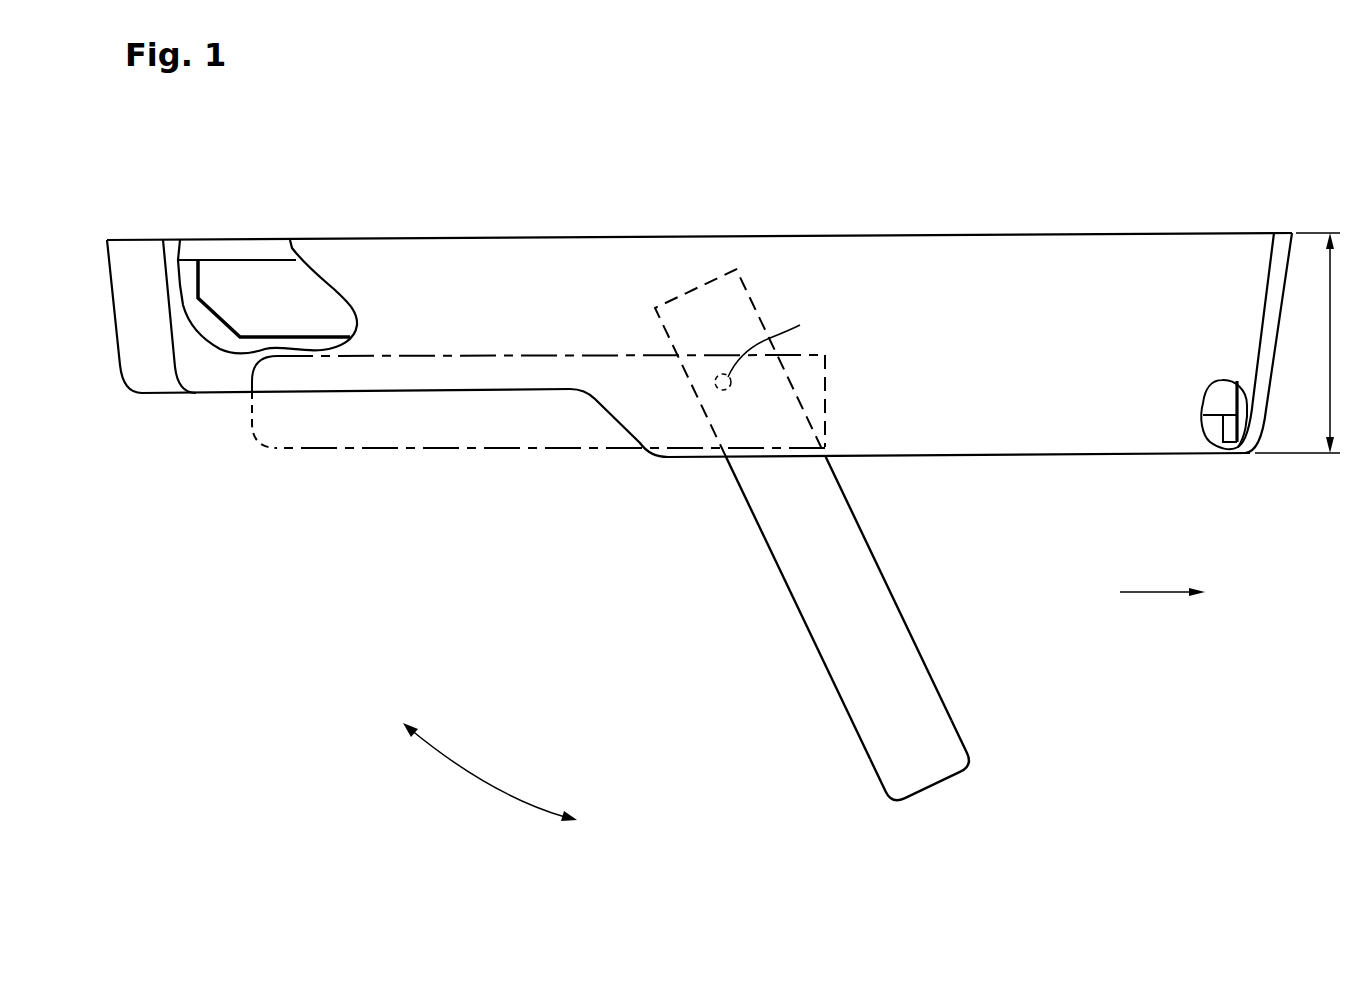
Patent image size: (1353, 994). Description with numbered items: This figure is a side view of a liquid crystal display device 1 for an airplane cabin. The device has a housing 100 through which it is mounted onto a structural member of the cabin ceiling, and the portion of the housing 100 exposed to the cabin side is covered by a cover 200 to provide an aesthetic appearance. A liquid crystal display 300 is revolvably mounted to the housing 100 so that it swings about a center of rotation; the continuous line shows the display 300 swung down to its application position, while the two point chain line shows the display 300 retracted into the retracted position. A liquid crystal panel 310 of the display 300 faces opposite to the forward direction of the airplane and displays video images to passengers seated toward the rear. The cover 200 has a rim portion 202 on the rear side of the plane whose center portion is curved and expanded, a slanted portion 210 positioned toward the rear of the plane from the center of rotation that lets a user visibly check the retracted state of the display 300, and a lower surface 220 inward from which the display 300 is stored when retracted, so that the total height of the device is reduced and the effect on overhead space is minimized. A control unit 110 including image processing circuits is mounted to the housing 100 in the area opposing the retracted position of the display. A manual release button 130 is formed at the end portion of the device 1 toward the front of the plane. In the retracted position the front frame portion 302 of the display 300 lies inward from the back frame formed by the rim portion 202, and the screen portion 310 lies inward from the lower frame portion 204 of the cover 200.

The liquid crystal display device 1 is at (1250, 166).
The housing 100 is at (220, 250).
The control unit 110 is at (272, 285).
The manual release button 130 is at (1233, 437).
The cover 200 is at (1283, 252).
The rim portion 202 is at (103, 285).
The lower frame portion 204 is at (212, 393).
The slanted portion 210 is at (612, 420).
The lower surface 220 is at (1037, 453).
The liquid crystal display 300 is at (447, 450).
The front frame portion 302 is at (247, 412).
The liquid crystal panel 310 is at (822, 670).